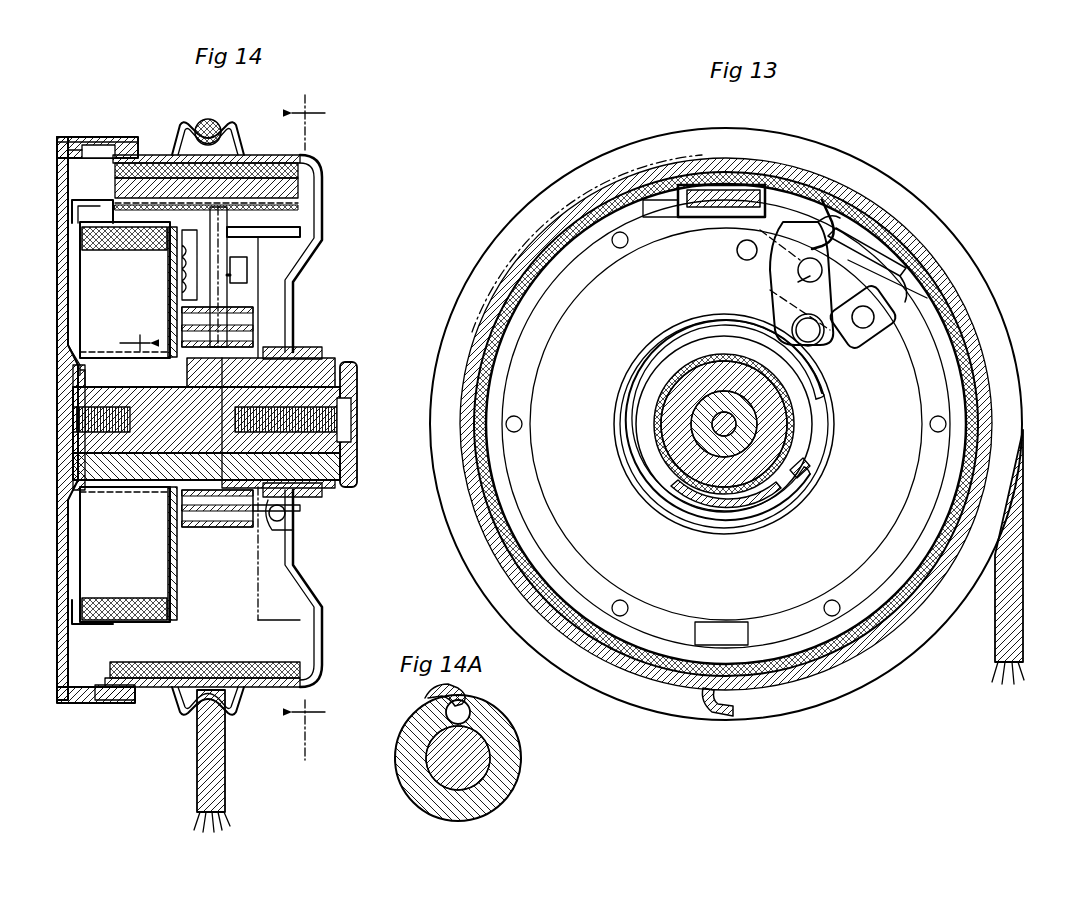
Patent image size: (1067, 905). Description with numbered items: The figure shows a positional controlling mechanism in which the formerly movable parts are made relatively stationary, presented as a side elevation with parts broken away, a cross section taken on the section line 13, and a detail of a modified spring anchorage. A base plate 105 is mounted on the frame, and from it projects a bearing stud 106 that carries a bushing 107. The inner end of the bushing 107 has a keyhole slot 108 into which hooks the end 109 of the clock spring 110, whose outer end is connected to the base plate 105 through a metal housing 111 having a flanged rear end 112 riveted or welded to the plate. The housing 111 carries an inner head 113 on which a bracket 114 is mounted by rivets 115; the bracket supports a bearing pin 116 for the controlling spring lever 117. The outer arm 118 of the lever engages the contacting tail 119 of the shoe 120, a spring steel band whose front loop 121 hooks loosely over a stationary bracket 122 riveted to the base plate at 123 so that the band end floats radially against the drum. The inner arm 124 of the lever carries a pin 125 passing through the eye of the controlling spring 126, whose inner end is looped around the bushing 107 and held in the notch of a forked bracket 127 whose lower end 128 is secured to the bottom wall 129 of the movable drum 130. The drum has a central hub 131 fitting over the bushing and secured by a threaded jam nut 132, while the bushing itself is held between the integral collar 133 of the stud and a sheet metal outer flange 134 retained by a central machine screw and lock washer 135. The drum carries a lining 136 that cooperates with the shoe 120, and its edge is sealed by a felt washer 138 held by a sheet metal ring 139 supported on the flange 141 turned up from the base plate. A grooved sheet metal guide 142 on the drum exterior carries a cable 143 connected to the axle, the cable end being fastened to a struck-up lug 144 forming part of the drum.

In FIG. 14, the section line 13- 13 is at (307, 426).
In FIG. 14, the base plate 105 is at (68, 290).
In FIG. 14, the bearing stud 106 is at (347, 375).
In FIG. 13, the bearing stud 106 is at (772, 430).
In FIG. 14A, the bearing stud 106 is at (450, 765).
In FIG. 14, the bushing 107 is at (150, 498).
In FIG. 14A, the bushing 107 is at (521, 760).
In FIG. 14, the keyhole slot 108 is at (75, 366).
In FIG. 14A, the keyhole slot 108 is at (470, 713).
In FIG. 14A, the end of the clock spring 109 is at (432, 697).
In FIG. 14, the clock spring 110 is at (80, 255).
In FIG. 14, the metal housing 111 is at (85, 237).
In FIG. 14, the flange 112 is at (72, 212).
In FIG. 14, the inner head 113 is at (170, 312).
In FIG. 13, the bracket 114 is at (885, 300).
In FIG. 13, the rivets 115 is at (828, 230).
In FIG. 14, the bearing pin 116 is at (247, 270).
In FIG. 13, the bearing pin 116 is at (800, 272).
In FIG. 14, the controlling spring lever 117 is at (255, 232).
In FIG. 13, the controlling spring lever 117 is at (870, 276).
In FIG. 13, the outer arm 118 is at (842, 245).
In FIG. 13, the contacting tail 119 is at (850, 262).
In FIG. 13, the shoe 120 is at (983, 343).
In FIG. 13, the loop 121 is at (772, 205).
In FIG. 14, the stationary bracket 122 is at (240, 188).
In FIG. 13, the stationary bracket 122 is at (737, 188).
In FIG. 14, the rivet 123 is at (60, 155).
In FIG. 13, the inner arm 124 is at (812, 342).
In FIG. 13, the pin 125 is at (795, 300).
In FIG. 13, the controlling spring 126 is at (617, 402).
In FIG. 14, the forked bracket 127 is at (322, 492).
In FIG. 13, the forked bracket 127 is at (792, 492).
In FIG. 14, the lower end 128 is at (290, 514).
In FIG. 13, the lower end 128 is at (728, 508).
In FIG. 14, the bottom wall 129 is at (302, 278).
In FIG. 14, the drum 130 is at (302, 158).
In FIG. 14, the hub 131 is at (257, 330).
In FIG. 13, the hub 131 is at (680, 450).
In FIG. 14, the jam nut 132 is at (305, 356).
In FIG. 14, the collar 133 is at (68, 404).
In FIG. 14, the outer flange 134 is at (352, 400).
In FIG. 14, the machine screw and lock washer 135 is at (354, 422).
In FIG. 13, the machine screw and lock washer 135 is at (700, 478).
In FIG. 14, the lining 136 is at (305, 170).
In FIG. 13, the lining 136 is at (655, 683).
In FIG. 14, the felt washer 138 is at (123, 140).
In FIG. 14, the sheet metal ring 139 is at (98, 136).
In FIG. 14, the flange 141 is at (80, 140).
In FIG. 14, the sheet metal guide 142 is at (248, 142).
In FIG. 14, the cable 143 is at (220, 127).
In FIG. 13, the cable 143 is at (997, 668).
In FIG. 13, the lug 144 is at (705, 708).